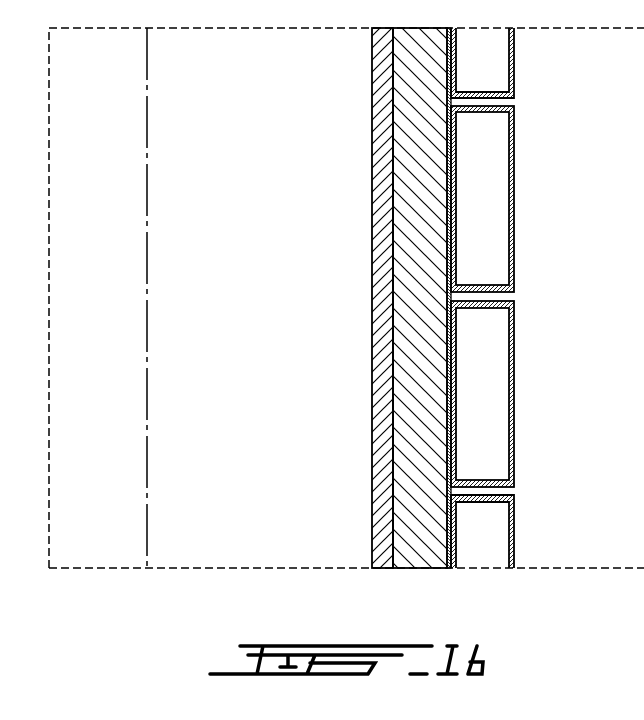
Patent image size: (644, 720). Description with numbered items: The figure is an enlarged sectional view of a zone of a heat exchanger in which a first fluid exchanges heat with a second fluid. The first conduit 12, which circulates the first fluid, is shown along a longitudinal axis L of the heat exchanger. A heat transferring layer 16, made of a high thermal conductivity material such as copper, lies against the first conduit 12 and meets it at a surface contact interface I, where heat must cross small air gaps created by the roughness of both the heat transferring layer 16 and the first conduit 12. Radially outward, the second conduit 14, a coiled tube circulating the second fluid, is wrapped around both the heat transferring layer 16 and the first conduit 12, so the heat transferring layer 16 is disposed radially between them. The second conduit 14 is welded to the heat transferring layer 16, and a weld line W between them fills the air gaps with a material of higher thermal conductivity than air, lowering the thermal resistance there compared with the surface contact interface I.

The first conduit 12 is at (385, 490).
The heat transferring layer 16 is at (418, 265).
The second conduit 14 is at (478, 65).
The weld line W is at (447, 382).
The surface contact interface I is at (392, 70).
The longitudinal axis L is at (148, 102).